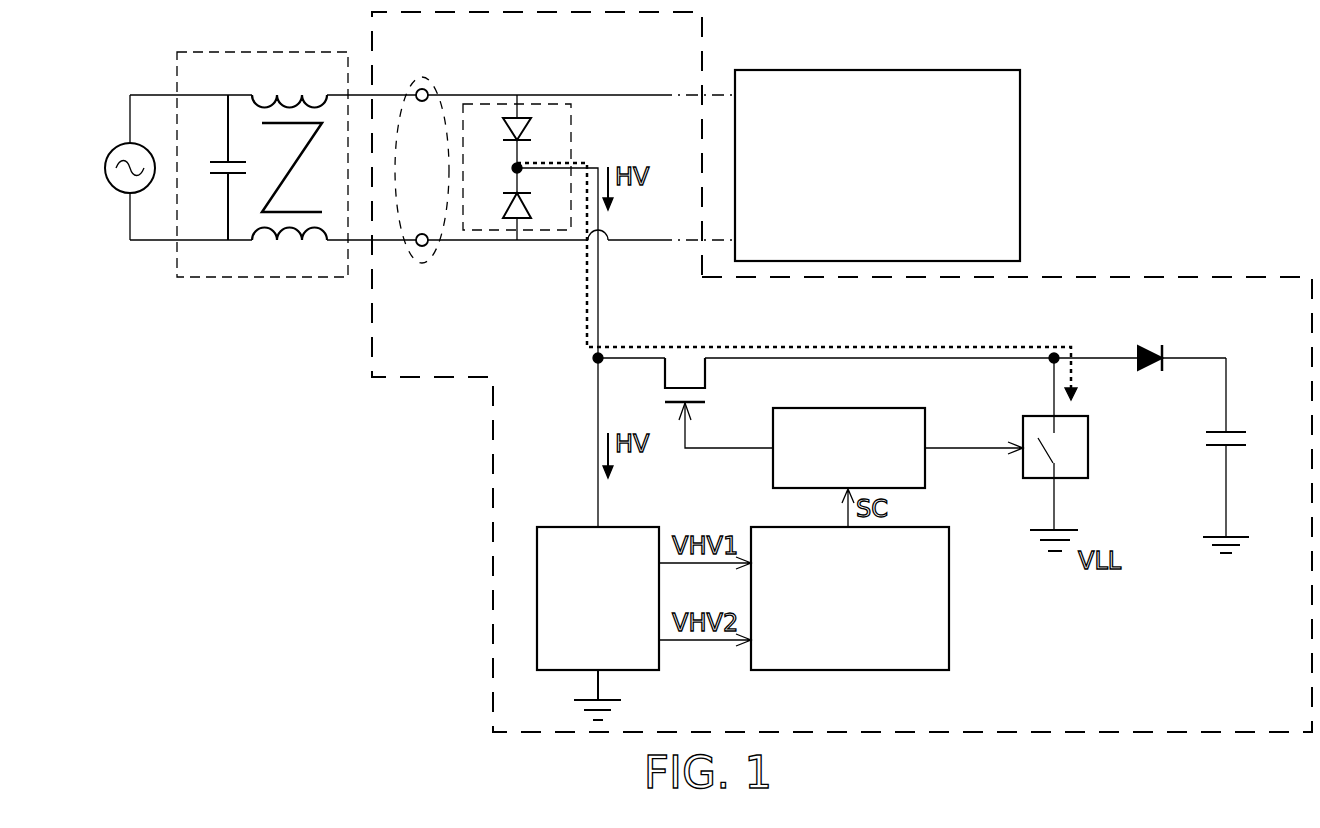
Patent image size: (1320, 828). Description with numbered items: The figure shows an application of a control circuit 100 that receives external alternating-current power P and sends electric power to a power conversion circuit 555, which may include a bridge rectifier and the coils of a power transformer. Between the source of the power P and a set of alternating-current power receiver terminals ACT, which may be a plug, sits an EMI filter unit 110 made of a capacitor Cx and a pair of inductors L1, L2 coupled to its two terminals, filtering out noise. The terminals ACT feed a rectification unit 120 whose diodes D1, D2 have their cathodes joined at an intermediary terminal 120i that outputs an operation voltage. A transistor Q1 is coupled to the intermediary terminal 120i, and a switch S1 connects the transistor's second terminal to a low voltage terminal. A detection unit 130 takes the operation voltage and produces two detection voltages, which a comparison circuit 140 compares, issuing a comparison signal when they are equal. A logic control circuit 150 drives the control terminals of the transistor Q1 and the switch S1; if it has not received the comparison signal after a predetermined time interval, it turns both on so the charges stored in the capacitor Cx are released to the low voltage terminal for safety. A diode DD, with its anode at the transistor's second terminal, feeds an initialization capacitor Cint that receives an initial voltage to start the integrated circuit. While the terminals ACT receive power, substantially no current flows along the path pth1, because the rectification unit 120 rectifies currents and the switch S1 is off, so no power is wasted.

The control circuit 100 is at (1205, 275).
The EMI filter unit 110 is at (262, 205).
The rectification unit 120 is at (517, 204).
The intermediary terminal 120i is at (494, 168).
The detection unit 130 is at (598, 598).
The comparison circuit 140 is at (850, 598).
The logic control circuit 150 is at (849, 448).
The power conversion circuit 555 is at (877, 165).
The external alternating-current power P is at (119, 167).
The capacitor Cx is at (216, 167).
The inductor L1 is at (289, 84).
The inductor L2 is at (289, 249).
The set of alternating-current power receiver terminals ACT is at (422, 78).
The diode D1 is at (536, 131).
The diode D2 is at (536, 208).
The path pth1 is at (957, 342).
The transistor Q1 is at (719, 403).
The switch S1 is at (1088, 446).
The diode DD is at (1152, 342).
The initialization capacitor Cint is at (1251, 455).